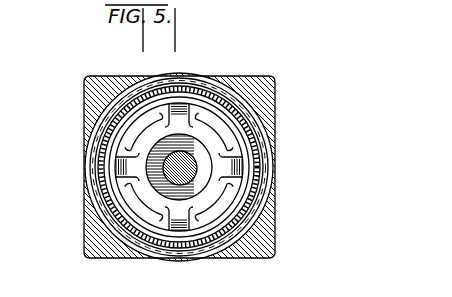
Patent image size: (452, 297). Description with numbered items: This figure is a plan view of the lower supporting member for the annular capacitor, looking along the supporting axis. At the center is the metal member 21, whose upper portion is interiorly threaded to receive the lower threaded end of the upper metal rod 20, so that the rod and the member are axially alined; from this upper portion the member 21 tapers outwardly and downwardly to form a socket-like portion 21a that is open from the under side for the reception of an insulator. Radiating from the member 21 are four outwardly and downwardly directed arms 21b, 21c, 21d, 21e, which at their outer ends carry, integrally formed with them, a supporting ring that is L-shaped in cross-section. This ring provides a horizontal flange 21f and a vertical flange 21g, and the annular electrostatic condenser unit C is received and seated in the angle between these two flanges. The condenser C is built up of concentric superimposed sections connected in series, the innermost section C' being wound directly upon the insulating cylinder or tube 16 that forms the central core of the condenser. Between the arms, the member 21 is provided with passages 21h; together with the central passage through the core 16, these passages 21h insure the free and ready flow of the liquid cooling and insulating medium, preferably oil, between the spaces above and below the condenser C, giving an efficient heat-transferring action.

The insulating cylinder or tube 16 is at (228, 207).
The upper metal rod 20 is at (143, 215).
The metal member 21 is at (160, 156).
The socket-like portion 21a is at (142, 196).
The arm 21b is at (183, 110).
The arm 21c is at (242, 152).
The arm 21d is at (181, 231).
The arm 21e is at (124, 165).
The horizontal flange 21f is at (85, 88).
The vertical flange 21g is at (234, 195).
The passages 21h is at (283, 219).
The electrostatic condenser unit C is at (179, 147).
The condenser section C' is at (183, 160).